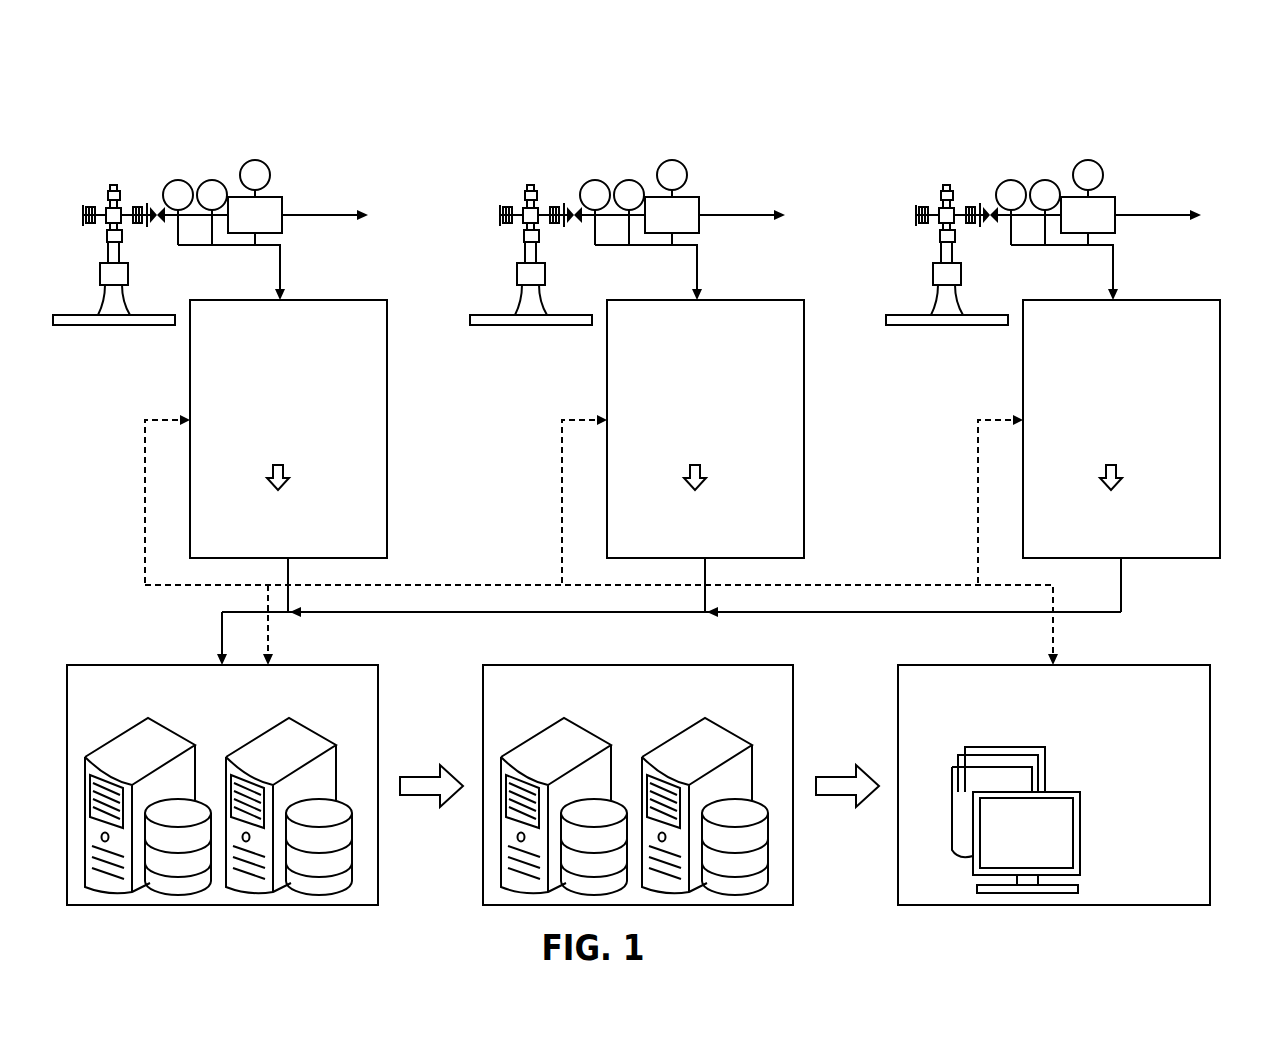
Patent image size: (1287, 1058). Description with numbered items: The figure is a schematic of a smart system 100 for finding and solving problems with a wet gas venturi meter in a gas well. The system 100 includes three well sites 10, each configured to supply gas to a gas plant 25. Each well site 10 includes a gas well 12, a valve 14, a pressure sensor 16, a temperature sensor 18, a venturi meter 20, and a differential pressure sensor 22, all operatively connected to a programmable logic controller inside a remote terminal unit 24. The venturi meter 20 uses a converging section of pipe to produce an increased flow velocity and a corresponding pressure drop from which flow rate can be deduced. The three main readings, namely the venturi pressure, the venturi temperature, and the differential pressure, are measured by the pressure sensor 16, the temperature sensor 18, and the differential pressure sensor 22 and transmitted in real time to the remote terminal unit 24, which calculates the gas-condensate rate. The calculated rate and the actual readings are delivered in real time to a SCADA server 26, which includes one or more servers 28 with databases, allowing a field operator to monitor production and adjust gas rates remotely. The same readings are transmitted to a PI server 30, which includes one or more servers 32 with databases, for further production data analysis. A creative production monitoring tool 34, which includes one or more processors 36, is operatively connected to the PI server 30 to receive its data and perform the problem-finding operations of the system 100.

The smart system 100 is at (162, 82).
The well site 10 is at (340, 149).
The gas well 12 is at (130, 307).
The valve 14 is at (158, 207).
The pressure sensor 16 is at (170, 183).
The temperature sensor 18 is at (211, 180).
The venturi meter 20 is at (283, 197).
The differential pressure sensor 22 is at (255, 160).
The remote terminal unit 24 is at (312, 313).
The gas plant 25 is at (384, 219).
The SCADA server 26 is at (252, 766).
The server 28 is at (317, 808).
The PI server 30 is at (668, 766).
The server 32 is at (733, 808).
The creative production monitoring tool 34 is at (1089, 785).
The processor 36 is at (1060, 823).